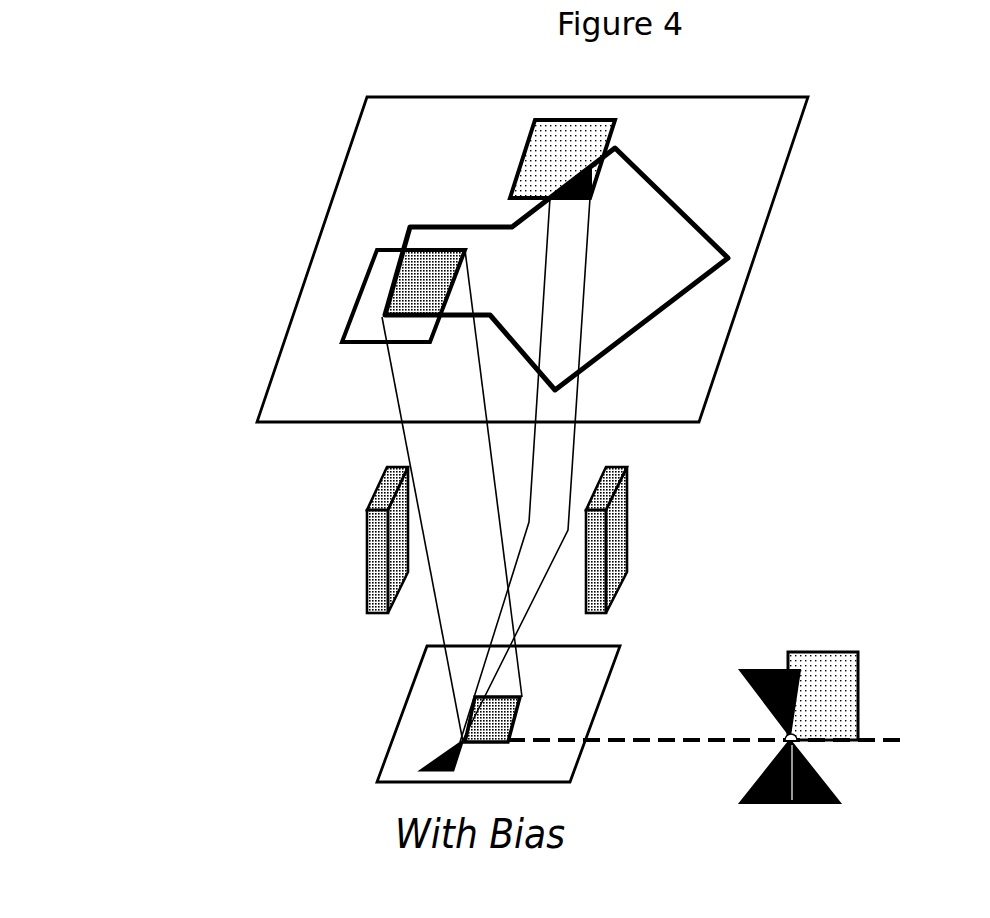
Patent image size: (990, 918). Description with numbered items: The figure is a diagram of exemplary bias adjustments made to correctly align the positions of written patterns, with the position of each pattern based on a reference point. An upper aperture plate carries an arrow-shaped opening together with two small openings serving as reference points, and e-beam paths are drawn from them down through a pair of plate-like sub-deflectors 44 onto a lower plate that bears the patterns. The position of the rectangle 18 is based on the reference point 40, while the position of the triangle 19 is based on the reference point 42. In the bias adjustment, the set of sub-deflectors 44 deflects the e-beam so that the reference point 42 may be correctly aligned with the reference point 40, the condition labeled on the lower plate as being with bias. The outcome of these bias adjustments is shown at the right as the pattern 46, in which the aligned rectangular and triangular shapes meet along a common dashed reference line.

The rectangle 18 is at (517, 710).
The triangle 19 is at (420, 768).
The reference point 40 is at (385, 315).
The reference point 42 is at (600, 153).
The sub-deflectors 44 is at (792, 462).
The pattern 46 is at (953, 617).